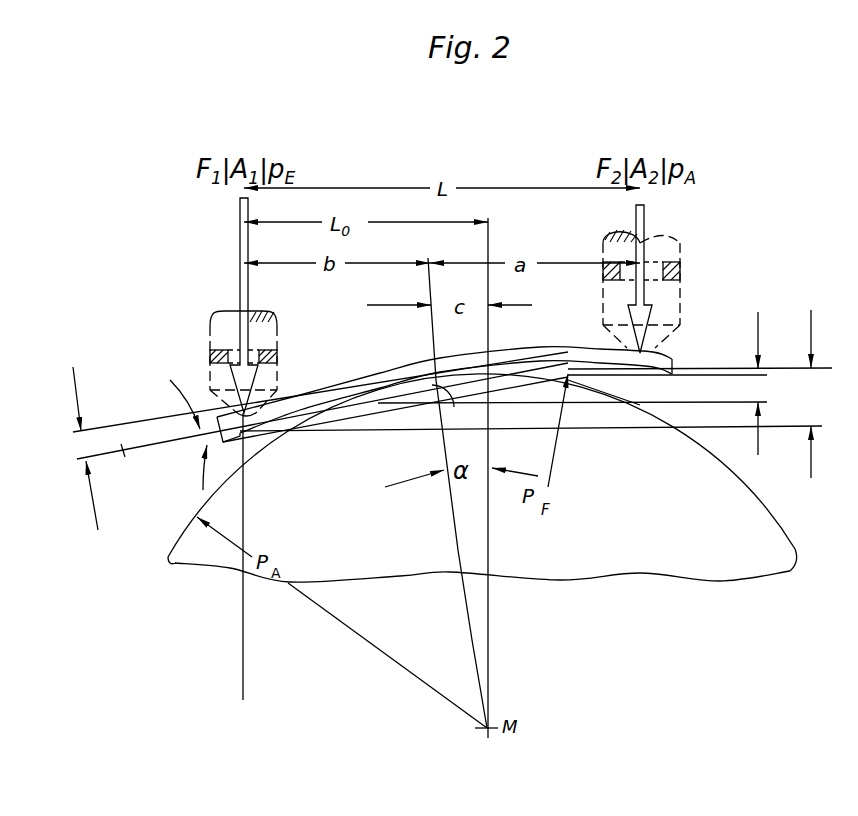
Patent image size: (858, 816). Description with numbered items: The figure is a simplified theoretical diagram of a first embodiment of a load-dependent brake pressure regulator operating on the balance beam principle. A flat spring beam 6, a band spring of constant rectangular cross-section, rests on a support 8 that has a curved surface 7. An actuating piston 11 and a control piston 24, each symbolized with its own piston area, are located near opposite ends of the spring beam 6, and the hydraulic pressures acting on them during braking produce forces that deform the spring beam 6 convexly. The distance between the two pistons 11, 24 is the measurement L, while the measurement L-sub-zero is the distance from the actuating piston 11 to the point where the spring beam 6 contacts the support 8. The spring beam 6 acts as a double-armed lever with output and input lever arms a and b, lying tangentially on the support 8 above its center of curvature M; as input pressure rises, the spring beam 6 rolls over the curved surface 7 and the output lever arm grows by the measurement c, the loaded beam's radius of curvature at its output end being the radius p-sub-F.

The spring beam 6 is at (241, 578).
The curved surface 7 is at (707, 453).
The support 8 is at (654, 505).
The actuating piston 11 is at (192, 312).
The control piston 24 is at (706, 295).